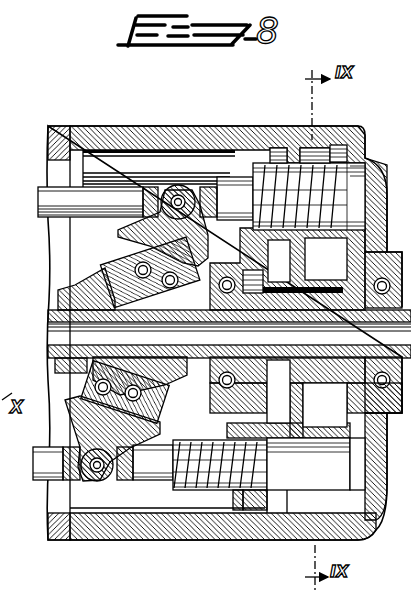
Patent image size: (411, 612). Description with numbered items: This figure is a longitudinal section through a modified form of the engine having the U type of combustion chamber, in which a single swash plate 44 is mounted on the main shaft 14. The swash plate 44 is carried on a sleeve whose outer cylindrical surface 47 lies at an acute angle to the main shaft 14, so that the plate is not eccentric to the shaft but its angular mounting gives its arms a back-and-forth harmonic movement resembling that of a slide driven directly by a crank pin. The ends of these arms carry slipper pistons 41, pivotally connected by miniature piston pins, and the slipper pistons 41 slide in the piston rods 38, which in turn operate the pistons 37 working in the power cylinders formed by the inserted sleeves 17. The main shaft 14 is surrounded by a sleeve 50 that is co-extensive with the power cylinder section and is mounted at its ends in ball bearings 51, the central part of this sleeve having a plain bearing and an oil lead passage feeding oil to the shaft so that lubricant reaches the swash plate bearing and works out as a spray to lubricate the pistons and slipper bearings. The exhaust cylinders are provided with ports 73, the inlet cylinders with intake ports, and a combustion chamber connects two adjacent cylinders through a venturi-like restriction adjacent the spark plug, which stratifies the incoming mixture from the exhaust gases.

The main shaft 14 is at (48, 347).
The inserted sleeves 17 is at (320, 200).
The pistons 37 is at (315, 205).
The piston rods 38 is at (143, 328).
The slipper pistons 41 is at (190, 184).
The swash plate 44 is at (182, 236).
The outer cylindrical surface 47 is at (113, 290).
The sleeve 50 is at (318, 372).
The ball bearings 51 is at (210, 390).
The exhaust ports 73 is at (290, 190).